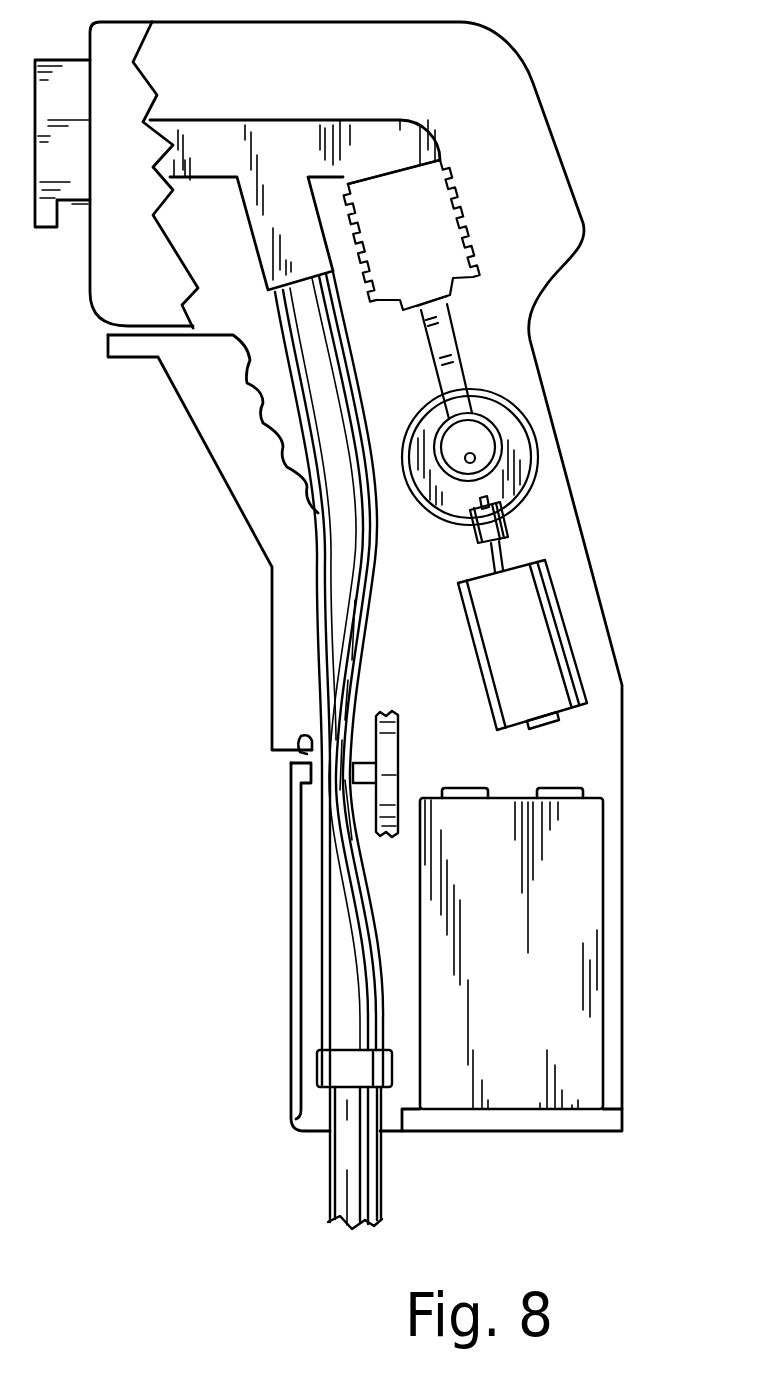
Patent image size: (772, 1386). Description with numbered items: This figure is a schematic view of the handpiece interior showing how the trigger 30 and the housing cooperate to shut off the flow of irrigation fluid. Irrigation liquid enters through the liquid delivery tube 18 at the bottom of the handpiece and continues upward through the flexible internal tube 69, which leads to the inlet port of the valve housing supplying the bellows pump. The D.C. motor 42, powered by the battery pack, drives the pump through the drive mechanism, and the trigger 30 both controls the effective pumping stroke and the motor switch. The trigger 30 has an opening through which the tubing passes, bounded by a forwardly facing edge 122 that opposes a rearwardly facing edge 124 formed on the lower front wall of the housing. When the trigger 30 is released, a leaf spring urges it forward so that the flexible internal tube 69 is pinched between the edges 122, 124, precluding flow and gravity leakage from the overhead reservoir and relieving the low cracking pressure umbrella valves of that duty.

The liquid delivery tube 18 is at (380, 1177).
The trigger 30 is at (210, 460).
The D.C. motor 42 is at (527, 617).
The flexible internal tube 69 is at (340, 900).
The forwardly facing edge 122 is at (364, 765).
The rearwardly facing edge 124 is at (312, 763).